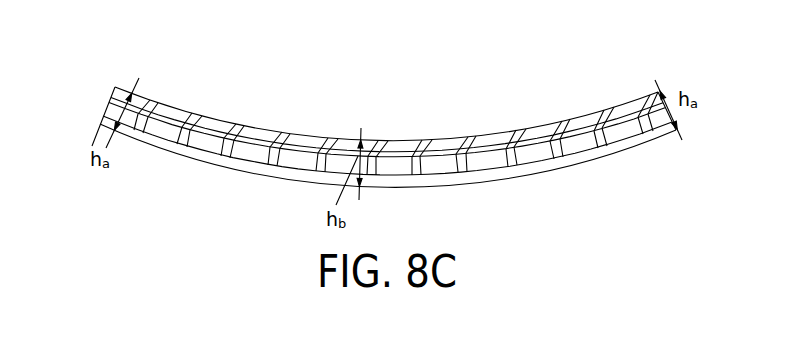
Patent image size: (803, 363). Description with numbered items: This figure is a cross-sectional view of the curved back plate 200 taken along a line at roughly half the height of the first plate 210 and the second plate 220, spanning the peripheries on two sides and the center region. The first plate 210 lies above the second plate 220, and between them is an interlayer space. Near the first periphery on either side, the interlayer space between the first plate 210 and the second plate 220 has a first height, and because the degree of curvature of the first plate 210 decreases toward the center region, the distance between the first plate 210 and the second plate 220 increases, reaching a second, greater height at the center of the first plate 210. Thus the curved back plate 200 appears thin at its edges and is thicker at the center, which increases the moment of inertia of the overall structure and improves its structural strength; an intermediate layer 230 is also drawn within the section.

The curved back plate 200 is at (115, 24).
The first plate 210 is at (113, 89).
The second plate 220 is at (106, 117).
The intermediate layer with segmented blocks 230 is at (135, 97).